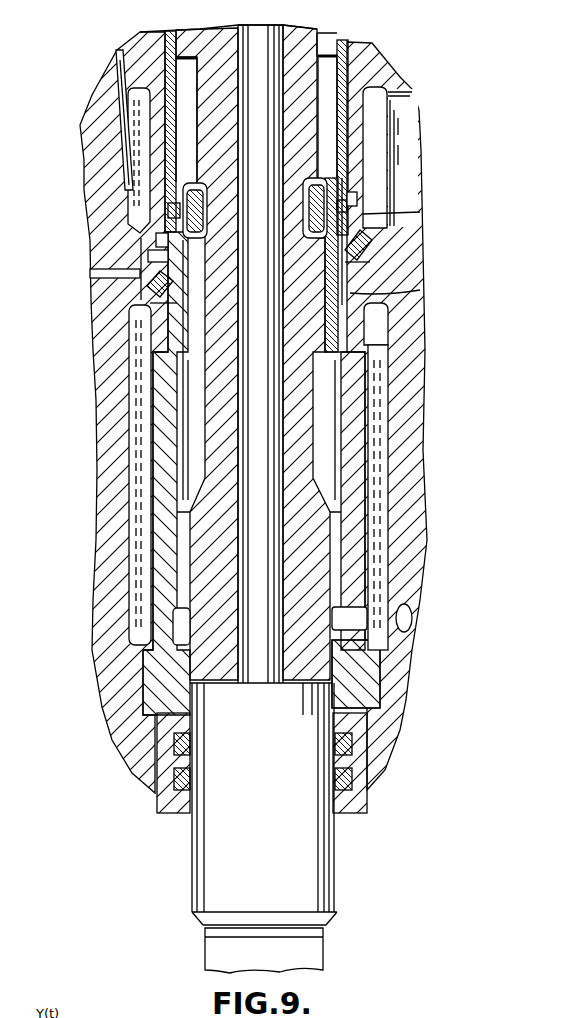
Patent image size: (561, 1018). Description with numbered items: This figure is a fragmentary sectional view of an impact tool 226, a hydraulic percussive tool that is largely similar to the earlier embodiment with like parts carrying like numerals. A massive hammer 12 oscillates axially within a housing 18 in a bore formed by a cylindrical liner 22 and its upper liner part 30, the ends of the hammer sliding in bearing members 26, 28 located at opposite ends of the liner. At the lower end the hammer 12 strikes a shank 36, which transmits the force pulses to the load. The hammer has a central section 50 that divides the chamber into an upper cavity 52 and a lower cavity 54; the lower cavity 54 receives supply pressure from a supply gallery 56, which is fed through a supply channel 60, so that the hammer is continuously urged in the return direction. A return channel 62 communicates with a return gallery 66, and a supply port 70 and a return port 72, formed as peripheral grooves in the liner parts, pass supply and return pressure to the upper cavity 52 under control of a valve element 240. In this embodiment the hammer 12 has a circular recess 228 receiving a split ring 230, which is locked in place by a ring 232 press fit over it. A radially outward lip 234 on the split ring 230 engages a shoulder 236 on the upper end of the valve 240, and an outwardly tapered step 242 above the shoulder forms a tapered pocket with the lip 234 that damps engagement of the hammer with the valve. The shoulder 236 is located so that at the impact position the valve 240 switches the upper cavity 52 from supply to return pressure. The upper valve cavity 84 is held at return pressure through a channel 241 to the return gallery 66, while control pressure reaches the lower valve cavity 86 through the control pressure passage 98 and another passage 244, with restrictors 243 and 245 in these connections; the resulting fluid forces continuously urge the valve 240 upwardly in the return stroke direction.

The hammer 12 is at (300, 37).
The housing 18 is at (411, 90).
The liner 22 is at (353, 412).
The bearing member 26 is at (355, 797).
The bearing member 28 is at (320, 45).
The upper liner part 30 is at (352, 157).
The shank 36 is at (312, 952).
The central section of hammer 50 is at (323, 533).
The upper cavity 52 is at (190, 408).
The lower cavity 54 is at (343, 612).
The supply gallery 56 is at (375, 385).
The supply channel 60 is at (408, 620).
The return channel 62 is at (108, 78).
The return gallery 66 is at (375, 130).
The supply port 70 is at (345, 352).
The return port 72 is at (358, 194).
The upper valve cavity 84 is at (160, 253).
The lower valve cavity 86 is at (190, 308).
The control pressure passage 98 is at (110, 278).
The impact tool 226 is at (406, 68).
The circular recess 228 is at (298, 184).
The split ring 230 is at (197, 188).
The ring 232 is at (348, 192).
The lip 234 is at (390, 214).
The shoulder 236 is at (160, 240).
The valve element 240 is at (365, 300).
The channel 241 is at (358, 254).
The outwardly tapered step 242 is at (150, 210).
The restrictor 243 is at (370, 240).
The passage 244 is at (140, 302).
The restrictor 245 is at (140, 303).